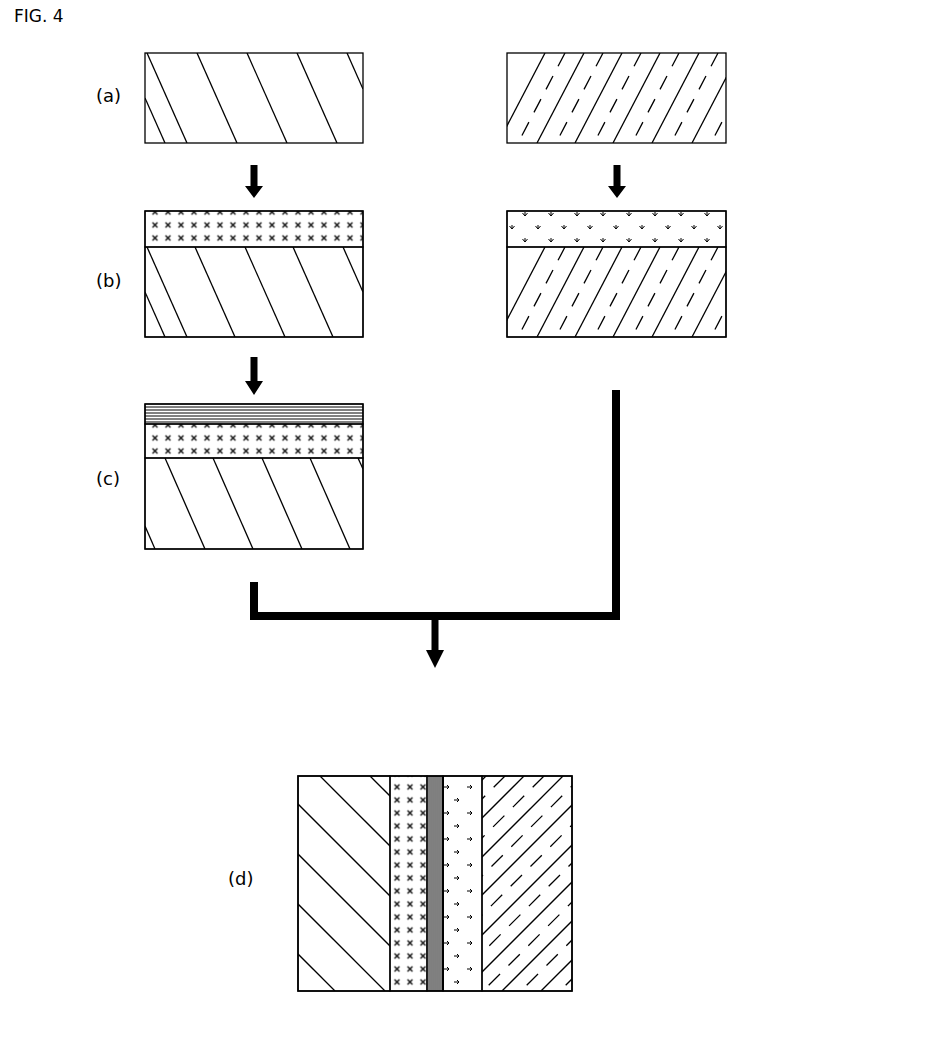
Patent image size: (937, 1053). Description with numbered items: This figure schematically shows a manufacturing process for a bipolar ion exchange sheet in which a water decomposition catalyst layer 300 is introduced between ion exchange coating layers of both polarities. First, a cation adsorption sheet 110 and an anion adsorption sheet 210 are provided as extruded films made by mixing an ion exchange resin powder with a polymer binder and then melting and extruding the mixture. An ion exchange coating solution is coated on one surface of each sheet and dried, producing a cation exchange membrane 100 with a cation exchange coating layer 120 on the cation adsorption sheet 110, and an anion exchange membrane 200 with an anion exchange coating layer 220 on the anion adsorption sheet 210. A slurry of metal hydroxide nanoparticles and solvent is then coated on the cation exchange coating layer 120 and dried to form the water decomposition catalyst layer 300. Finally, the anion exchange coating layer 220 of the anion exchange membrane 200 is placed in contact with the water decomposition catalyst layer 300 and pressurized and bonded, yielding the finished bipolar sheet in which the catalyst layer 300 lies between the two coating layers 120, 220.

The cation exchange membrane 100 is at (440, 205).
The cation adsorption sheet 110 is at (371, 103).
The cation exchange coating layer 120 is at (373, 228).
The anion exchange membrane 200 is at (801, 205).
The anion adsorption sheet 210 is at (733, 103).
The anion exchange coating layer 220 is at (735, 228).
The water decomposition catalyst layer 300 is at (373, 415).